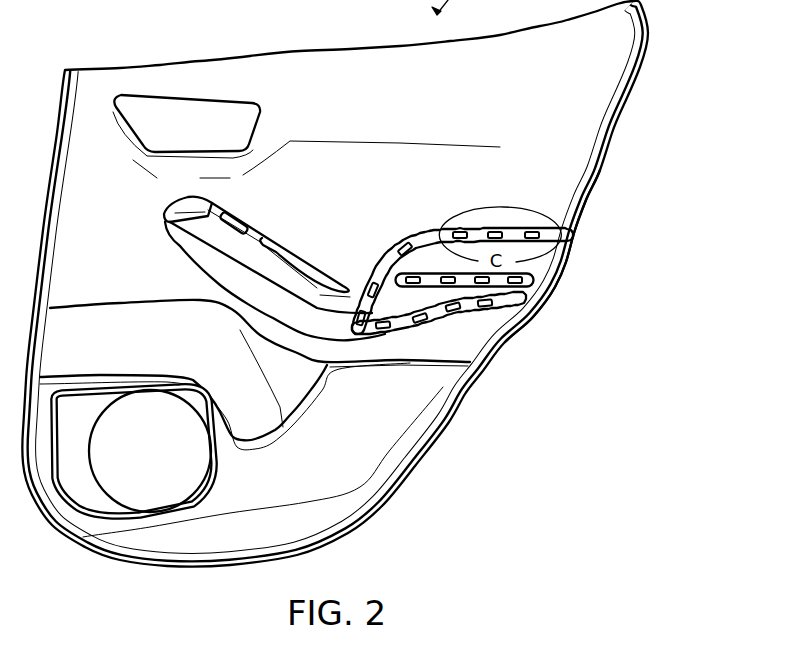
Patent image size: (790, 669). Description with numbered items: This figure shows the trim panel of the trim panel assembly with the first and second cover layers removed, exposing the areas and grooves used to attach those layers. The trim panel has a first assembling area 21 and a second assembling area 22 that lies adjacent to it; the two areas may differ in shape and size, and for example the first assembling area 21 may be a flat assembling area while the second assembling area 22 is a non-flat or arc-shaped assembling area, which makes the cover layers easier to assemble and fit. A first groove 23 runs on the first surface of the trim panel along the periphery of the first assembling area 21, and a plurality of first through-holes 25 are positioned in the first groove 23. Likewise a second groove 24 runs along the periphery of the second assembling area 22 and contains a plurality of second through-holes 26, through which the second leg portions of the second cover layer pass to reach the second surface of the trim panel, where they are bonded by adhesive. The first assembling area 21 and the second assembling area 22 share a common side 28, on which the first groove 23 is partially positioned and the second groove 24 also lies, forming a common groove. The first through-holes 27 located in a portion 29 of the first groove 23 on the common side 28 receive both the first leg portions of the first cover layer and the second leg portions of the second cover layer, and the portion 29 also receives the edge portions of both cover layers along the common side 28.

The first assembling area 21 is at (551, 248).
The second assembling area 22 is at (522, 292).
The first groove 23 is at (524, 231).
The second groove 24 is at (487, 311).
The first through-holes 25 is at (460, 231).
The second through-holes 26 is at (437, 322).
The first through-holes on the common side 27 is at (403, 282).
The common side 28 is at (549, 259).
The portion of first groove 29 is at (430, 273).